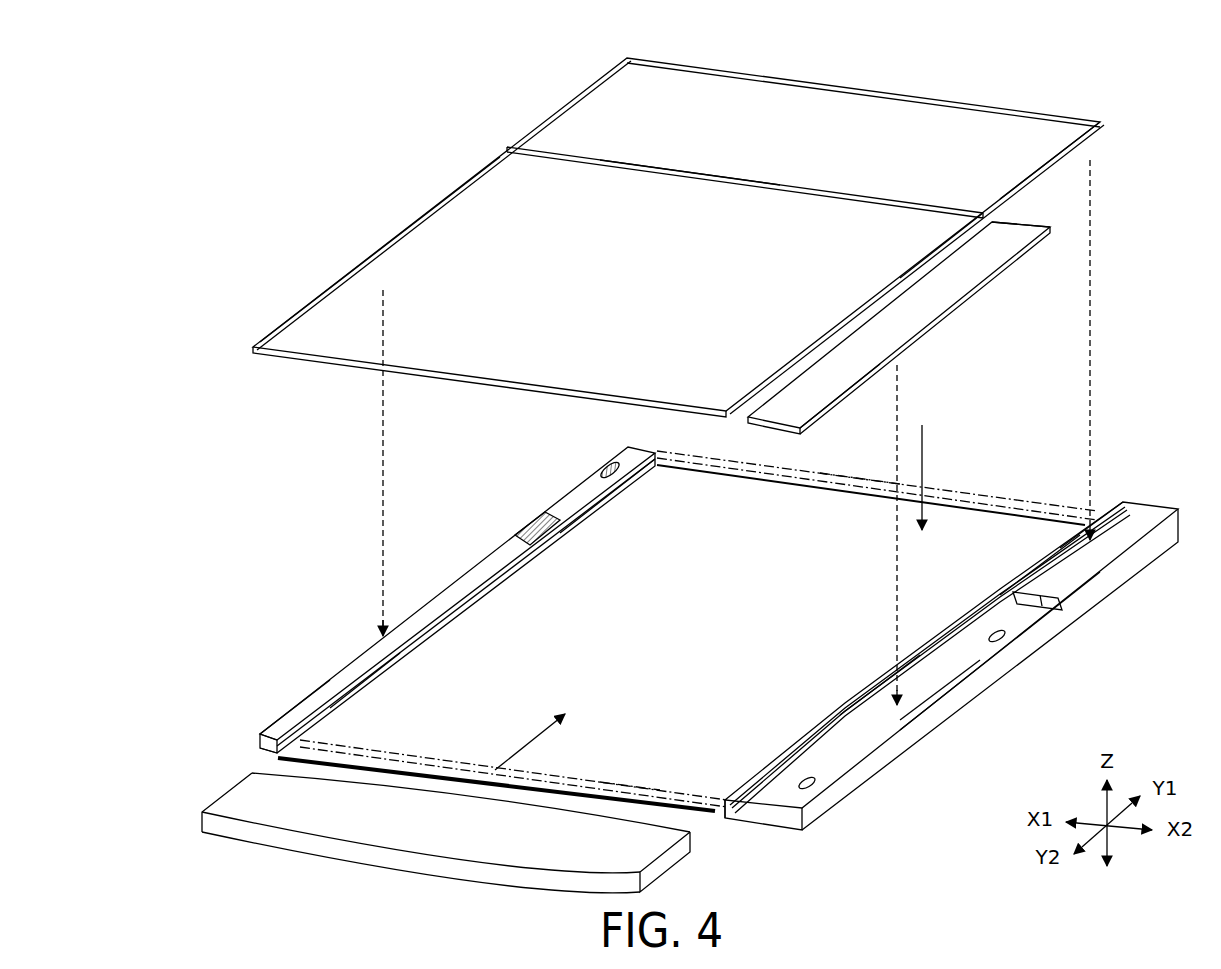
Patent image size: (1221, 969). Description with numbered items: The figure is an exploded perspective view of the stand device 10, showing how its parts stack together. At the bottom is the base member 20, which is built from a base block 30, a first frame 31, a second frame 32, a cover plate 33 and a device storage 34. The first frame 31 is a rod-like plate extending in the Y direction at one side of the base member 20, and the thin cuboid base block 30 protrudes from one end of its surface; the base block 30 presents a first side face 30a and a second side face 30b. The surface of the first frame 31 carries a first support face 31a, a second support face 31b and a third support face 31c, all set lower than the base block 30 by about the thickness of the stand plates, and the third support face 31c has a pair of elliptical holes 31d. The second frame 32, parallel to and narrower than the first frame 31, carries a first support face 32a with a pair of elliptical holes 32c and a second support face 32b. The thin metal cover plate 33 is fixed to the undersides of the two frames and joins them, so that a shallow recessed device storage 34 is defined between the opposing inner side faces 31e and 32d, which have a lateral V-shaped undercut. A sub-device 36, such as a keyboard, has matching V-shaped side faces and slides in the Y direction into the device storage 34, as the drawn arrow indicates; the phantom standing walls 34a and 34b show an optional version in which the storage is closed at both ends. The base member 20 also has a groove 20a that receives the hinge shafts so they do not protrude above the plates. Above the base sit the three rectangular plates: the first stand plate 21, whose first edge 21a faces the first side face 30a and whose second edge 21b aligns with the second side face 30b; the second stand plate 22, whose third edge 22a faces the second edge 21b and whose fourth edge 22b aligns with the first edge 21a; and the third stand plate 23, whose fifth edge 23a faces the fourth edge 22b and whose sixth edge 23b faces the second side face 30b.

The stand device 10 is at (262, 131).
The base member 20 is at (302, 672).
The groove 20a is at (1022, 590).
The first stand plate 21 is at (966, 91).
The first edge 21a is at (1040, 170).
The second edge 21b is at (670, 174).
The second stand plate 22 is at (402, 199).
The third edge 22a is at (612, 160).
The fourth edge 22b is at (918, 270).
The third stand plate 23 is at (948, 333).
The fifth edge 23a is at (865, 327).
The sixth edge 23b is at (1035, 225).
The base block 30 is at (1130, 520).
The first side face 30a is at (1102, 505).
The second side face 30b is at (1032, 612).
The first frame 31 is at (1024, 667).
The first support face 31a is at (1043, 557).
The second support face 31b is at (872, 700).
The third support face 31c is at (948, 683).
The hole 31d is at (1006, 635).
The inner side face 31e is at (713, 831).
The second frame 32 is at (449, 577).
The first support face 32a is at (583, 498).
The second support face 32b is at (306, 704).
The hole 32c is at (578, 530).
The inner side face 32d is at (382, 668).
The cover plate 33 is at (938, 464).
The device storage 34 is at (638, 669).
The standing wall 34a is at (857, 482).
The standing wall 34b is at (627, 780).
The sub-device 36 is at (327, 812).